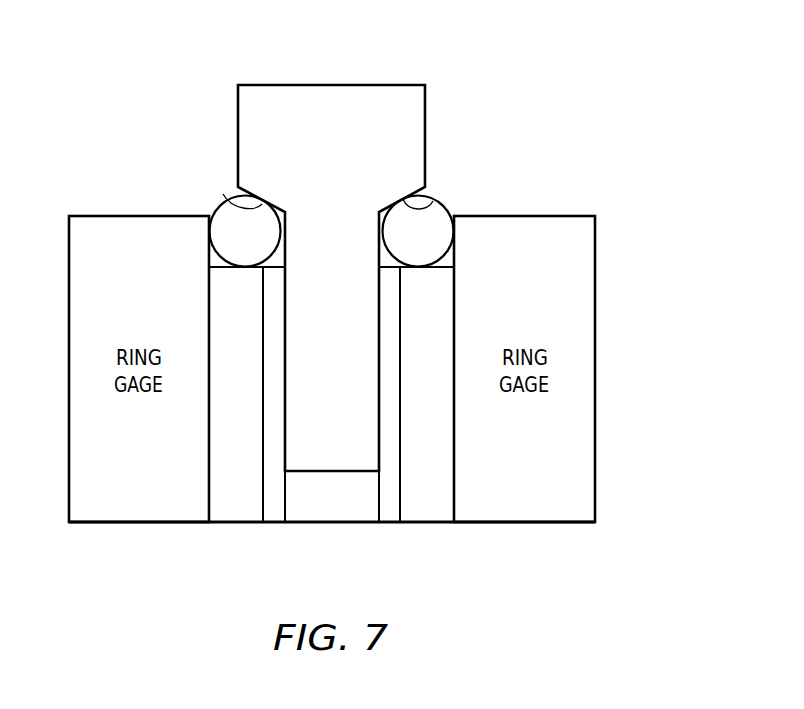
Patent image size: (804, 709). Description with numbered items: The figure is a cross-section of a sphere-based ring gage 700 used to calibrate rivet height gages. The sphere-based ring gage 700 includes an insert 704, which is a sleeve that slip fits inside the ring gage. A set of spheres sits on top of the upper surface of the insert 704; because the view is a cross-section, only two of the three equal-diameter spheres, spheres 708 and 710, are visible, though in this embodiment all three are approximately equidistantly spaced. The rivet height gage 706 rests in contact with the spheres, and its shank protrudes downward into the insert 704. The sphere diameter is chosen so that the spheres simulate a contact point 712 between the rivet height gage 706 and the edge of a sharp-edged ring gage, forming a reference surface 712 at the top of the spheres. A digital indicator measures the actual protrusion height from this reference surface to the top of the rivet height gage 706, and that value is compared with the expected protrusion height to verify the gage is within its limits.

The sphere-based ring gage 700 is at (305, 237).
The insert 704 is at (238, 526).
The rivet height gage 706 is at (238, 105).
The sphere 708 is at (448, 207).
The sphere 710 is at (215, 210).
The contact point 712 is at (232, 197).